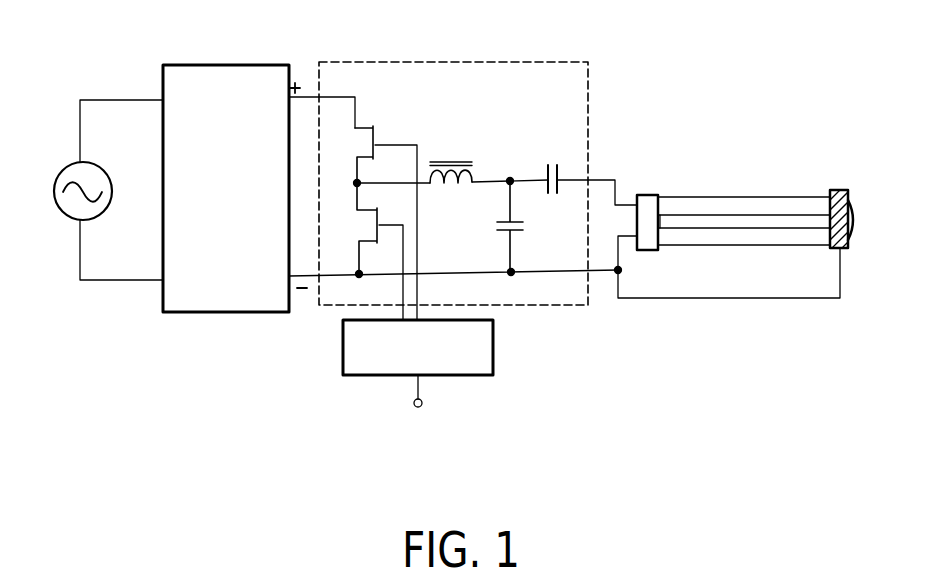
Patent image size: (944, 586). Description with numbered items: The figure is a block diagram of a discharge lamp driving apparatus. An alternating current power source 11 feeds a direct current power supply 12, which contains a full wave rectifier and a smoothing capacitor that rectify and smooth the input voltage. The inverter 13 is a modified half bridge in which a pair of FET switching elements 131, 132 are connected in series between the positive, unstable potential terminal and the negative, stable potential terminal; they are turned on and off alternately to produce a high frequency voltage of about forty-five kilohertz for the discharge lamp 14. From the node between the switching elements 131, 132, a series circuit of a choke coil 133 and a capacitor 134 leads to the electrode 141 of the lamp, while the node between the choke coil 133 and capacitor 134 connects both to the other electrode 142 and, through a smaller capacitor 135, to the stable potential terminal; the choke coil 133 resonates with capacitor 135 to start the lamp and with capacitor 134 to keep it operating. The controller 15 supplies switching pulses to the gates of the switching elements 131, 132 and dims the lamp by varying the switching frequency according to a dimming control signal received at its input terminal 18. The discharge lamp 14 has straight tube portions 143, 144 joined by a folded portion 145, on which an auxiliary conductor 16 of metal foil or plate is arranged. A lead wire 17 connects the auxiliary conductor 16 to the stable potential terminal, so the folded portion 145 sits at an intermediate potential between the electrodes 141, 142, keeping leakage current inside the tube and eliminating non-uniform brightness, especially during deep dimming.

The alternating current power source 11 is at (63, 171).
The direct current power supply 12 is at (218, 65).
The inverter 13 is at (470, 62).
The switching element 131 is at (369, 223).
The switching element 132 is at (362, 251).
The choke coil 133 is at (450, 160).
The capacitor 134 is at (584, 169).
The capacitor 135 is at (533, 226).
The discharge lamp 14 is at (736, 138).
The electrode 141 is at (668, 197).
The electrode 142 is at (667, 248).
The straight tube portion 143 is at (738, 197).
The straight tube portion 144 is at (745, 245).
The folded portion 145 is at (849, 236).
The controller 15 is at (494, 351).
The auxiliary conductor 16 is at (833, 190).
The lead wire 17 is at (577, 272).
The input terminal 18 is at (423, 404).